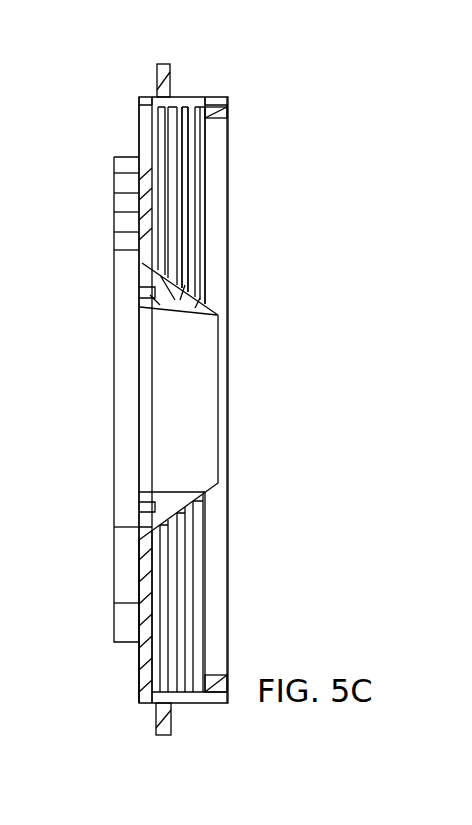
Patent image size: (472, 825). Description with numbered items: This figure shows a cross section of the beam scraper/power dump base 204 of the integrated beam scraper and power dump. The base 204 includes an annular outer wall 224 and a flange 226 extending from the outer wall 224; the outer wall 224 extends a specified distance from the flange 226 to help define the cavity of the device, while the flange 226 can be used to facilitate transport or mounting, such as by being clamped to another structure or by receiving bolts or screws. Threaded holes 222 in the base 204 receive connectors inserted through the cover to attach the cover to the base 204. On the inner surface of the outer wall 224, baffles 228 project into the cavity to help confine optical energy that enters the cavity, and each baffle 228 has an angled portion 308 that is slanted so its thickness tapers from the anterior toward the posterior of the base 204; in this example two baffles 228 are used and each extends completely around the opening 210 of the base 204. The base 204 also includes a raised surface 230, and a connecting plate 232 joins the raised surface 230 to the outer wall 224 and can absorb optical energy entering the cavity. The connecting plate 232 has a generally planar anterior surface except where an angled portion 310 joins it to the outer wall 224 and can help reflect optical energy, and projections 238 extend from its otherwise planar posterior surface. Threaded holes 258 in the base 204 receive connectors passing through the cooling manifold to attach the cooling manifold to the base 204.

The beam scraper/power dump base 204 is at (131, 44).
The flange 226 is at (150, 82).
The outer wall 224 is at (210, 91).
The threaded holes 222 is at (230, 117).
The angled portion 308 is at (173, 122).
The baffles 228 is at (190, 108).
The projections 238 is at (115, 244).
The threaded holes 258 is at (136, 294).
The raised surface 230 is at (194, 289).
The opening 210 is at (221, 348).
The connecting plate 232 is at (137, 583).
The angled portion 310 is at (152, 682).